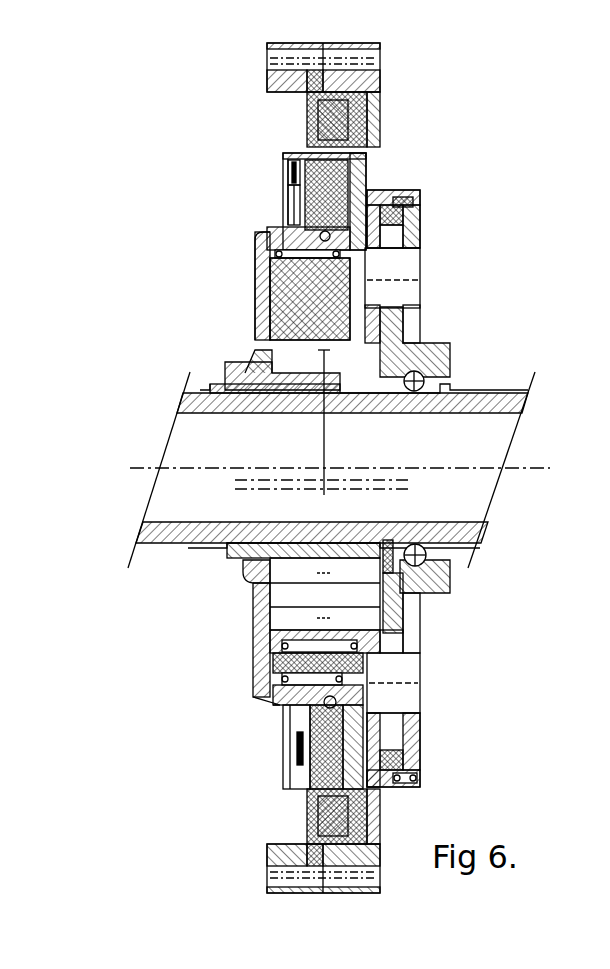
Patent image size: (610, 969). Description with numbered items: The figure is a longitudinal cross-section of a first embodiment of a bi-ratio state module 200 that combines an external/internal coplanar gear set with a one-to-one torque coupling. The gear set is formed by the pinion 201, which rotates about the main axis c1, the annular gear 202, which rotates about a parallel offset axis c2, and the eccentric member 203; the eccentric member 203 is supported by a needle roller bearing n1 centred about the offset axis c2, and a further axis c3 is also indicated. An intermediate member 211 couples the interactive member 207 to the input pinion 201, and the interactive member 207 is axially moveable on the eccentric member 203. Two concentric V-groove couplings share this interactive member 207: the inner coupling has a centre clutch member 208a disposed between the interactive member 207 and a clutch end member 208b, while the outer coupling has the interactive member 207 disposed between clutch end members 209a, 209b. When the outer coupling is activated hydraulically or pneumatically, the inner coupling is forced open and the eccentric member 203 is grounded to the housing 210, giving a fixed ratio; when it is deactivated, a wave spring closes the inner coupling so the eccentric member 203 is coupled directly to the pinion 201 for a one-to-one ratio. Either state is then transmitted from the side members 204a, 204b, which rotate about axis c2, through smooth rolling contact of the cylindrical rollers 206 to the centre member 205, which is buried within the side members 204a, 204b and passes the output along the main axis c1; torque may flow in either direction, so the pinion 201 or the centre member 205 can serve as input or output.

The bi-ratio state module 200 is at (135, 180).
The pinion 201 is at (235, 380).
The annular gear 202 is at (258, 342).
The eccentric member 203 is at (364, 160).
The side member 204a is at (609, 170).
The side member 204b is at (609, 217).
The centre member 205 is at (430, 345).
The cylindrical rollers 206 is at (418, 262).
The interactive member 207 is at (300, 156).
The centre clutch member 208a is at (298, 178).
The clutch end member 208b is at (300, 198).
The clutch end member 209a is at (307, 108).
The clutch end member 209b is at (372, 76).
The housing 210 is at (268, 48).
The intermediate member 211 is at (268, 250).
The needle roller bearing n1 is at (270, 302).
The main axis c1 is at (327, 467).
The offset axis c2 is at (235, 490).
The third axis c3 is at (415, 480).